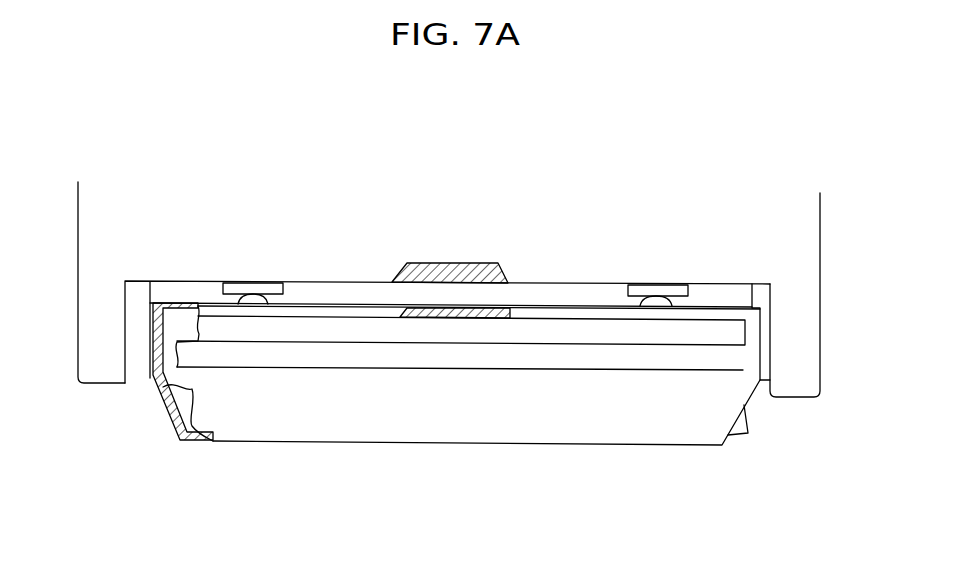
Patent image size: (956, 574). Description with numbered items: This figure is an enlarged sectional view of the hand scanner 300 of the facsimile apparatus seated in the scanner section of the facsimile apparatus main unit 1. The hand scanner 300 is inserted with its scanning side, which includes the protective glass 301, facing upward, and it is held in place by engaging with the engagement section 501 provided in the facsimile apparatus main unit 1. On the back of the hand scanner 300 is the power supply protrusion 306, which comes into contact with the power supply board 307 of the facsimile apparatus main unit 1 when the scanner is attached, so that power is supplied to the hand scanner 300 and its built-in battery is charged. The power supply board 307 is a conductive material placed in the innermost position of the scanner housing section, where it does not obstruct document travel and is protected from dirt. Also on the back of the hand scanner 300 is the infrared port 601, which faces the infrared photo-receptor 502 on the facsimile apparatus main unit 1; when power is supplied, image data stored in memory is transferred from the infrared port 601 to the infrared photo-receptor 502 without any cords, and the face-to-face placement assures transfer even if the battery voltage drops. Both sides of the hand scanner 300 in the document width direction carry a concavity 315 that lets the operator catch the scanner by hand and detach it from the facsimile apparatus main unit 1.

The facsimile apparatus main unit 1 is at (850, 216).
The hand scanner 300 is at (337, 462).
The protective glass 301 is at (680, 333).
The power supply protrusion 306 is at (243, 300).
The power supply board 307 is at (273, 286).
The concavity 315 is at (170, 430).
The engagement section 501 is at (134, 357).
The infrared photo-receptor 502 is at (480, 272).
The infrared port 601 is at (487, 319).